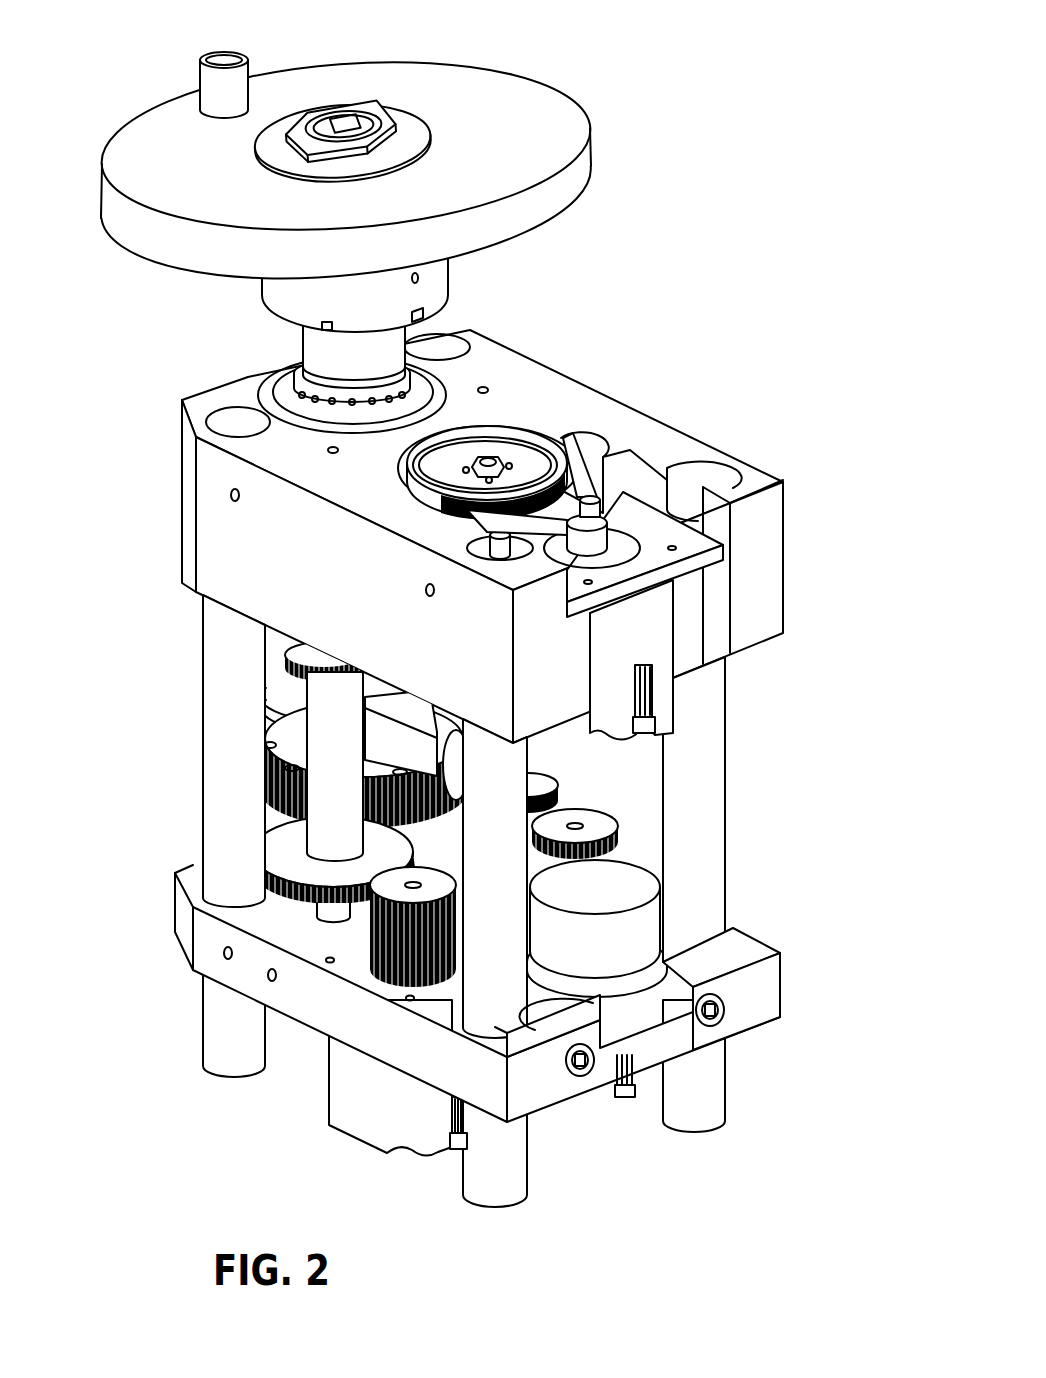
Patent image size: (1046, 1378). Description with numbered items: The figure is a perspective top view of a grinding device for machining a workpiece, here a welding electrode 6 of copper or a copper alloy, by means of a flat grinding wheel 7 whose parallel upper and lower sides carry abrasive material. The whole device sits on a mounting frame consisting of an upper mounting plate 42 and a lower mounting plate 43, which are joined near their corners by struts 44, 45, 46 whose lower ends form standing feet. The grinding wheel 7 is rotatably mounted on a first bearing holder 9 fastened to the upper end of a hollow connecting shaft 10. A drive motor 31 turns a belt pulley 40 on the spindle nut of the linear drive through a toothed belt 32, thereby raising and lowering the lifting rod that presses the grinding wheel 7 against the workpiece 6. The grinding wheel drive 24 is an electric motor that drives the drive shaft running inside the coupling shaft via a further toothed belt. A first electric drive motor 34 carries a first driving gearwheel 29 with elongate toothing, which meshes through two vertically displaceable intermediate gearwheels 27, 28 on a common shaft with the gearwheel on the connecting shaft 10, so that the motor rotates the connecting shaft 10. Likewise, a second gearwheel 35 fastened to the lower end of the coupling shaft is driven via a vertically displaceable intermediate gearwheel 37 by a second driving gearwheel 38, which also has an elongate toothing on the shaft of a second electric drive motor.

The welding electrode 6 is at (208, 90).
The grinding wheel 7 is at (440, 88).
The first bearing holder 9 is at (427, 277).
The connecting shaft 10 is at (320, 352).
The grinding wheel drive 24 is at (627, 893).
The intermediate gearwheel 27 is at (263, 650).
The intermediate gearwheel 28 is at (277, 845).
The first driving gearwheel 29 is at (363, 930).
The drive motor 31 is at (657, 632).
The toothed belt 32 is at (578, 480).
The first electric drive motor 34 is at (366, 1093).
The second gearwheel 35 is at (287, 755).
The intermediate gearwheel 37 is at (543, 783).
The second driving gearwheel 38 is at (588, 820).
The belt pulley 40 is at (510, 453).
The upper mounting plate 42 is at (186, 537).
The lower mounting plate 43 is at (745, 950).
The strut 44 is at (230, 1085).
The strut 45 is at (500, 1207).
The strut 46 is at (698, 1130).